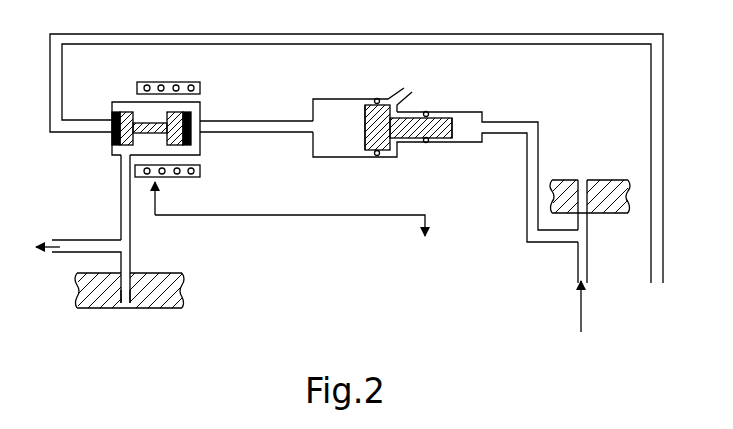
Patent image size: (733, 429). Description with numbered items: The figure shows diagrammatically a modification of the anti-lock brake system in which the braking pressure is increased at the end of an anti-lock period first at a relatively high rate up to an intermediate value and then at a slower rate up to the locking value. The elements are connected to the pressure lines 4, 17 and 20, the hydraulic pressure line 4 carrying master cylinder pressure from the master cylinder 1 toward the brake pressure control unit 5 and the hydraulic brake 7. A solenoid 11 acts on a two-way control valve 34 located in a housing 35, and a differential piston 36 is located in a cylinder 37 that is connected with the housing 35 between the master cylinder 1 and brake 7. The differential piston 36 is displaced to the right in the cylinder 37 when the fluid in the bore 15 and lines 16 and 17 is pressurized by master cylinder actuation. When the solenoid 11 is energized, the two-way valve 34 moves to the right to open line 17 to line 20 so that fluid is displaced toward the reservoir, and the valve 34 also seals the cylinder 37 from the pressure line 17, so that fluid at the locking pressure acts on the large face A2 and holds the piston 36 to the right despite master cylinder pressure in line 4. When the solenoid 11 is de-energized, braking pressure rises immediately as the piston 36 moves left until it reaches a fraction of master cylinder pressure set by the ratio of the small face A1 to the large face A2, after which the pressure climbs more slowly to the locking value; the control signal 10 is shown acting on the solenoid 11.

The master cylinder 1 is at (581, 312).
The hydraulic pressure line 4 is at (578, 262).
The brake pressure control unit 5 is at (166, 276).
The hydraulic brake 7 is at (50, 254).
The control signal line 10 is at (428, 217).
The solenoid 11 is at (191, 174).
The bore 15 is at (131, 303).
The line 16 is at (85, 246).
The pressure line 17 is at (132, 218).
The pressure line 20 is at (651, 250).
The two-way control valve 34 is at (150, 125).
The housing 35 is at (201, 143).
The differential piston 36 is at (380, 135).
The cylinder 37 is at (343, 158).
The small face A1 is at (452, 130).
The large face A2 is at (368, 125).